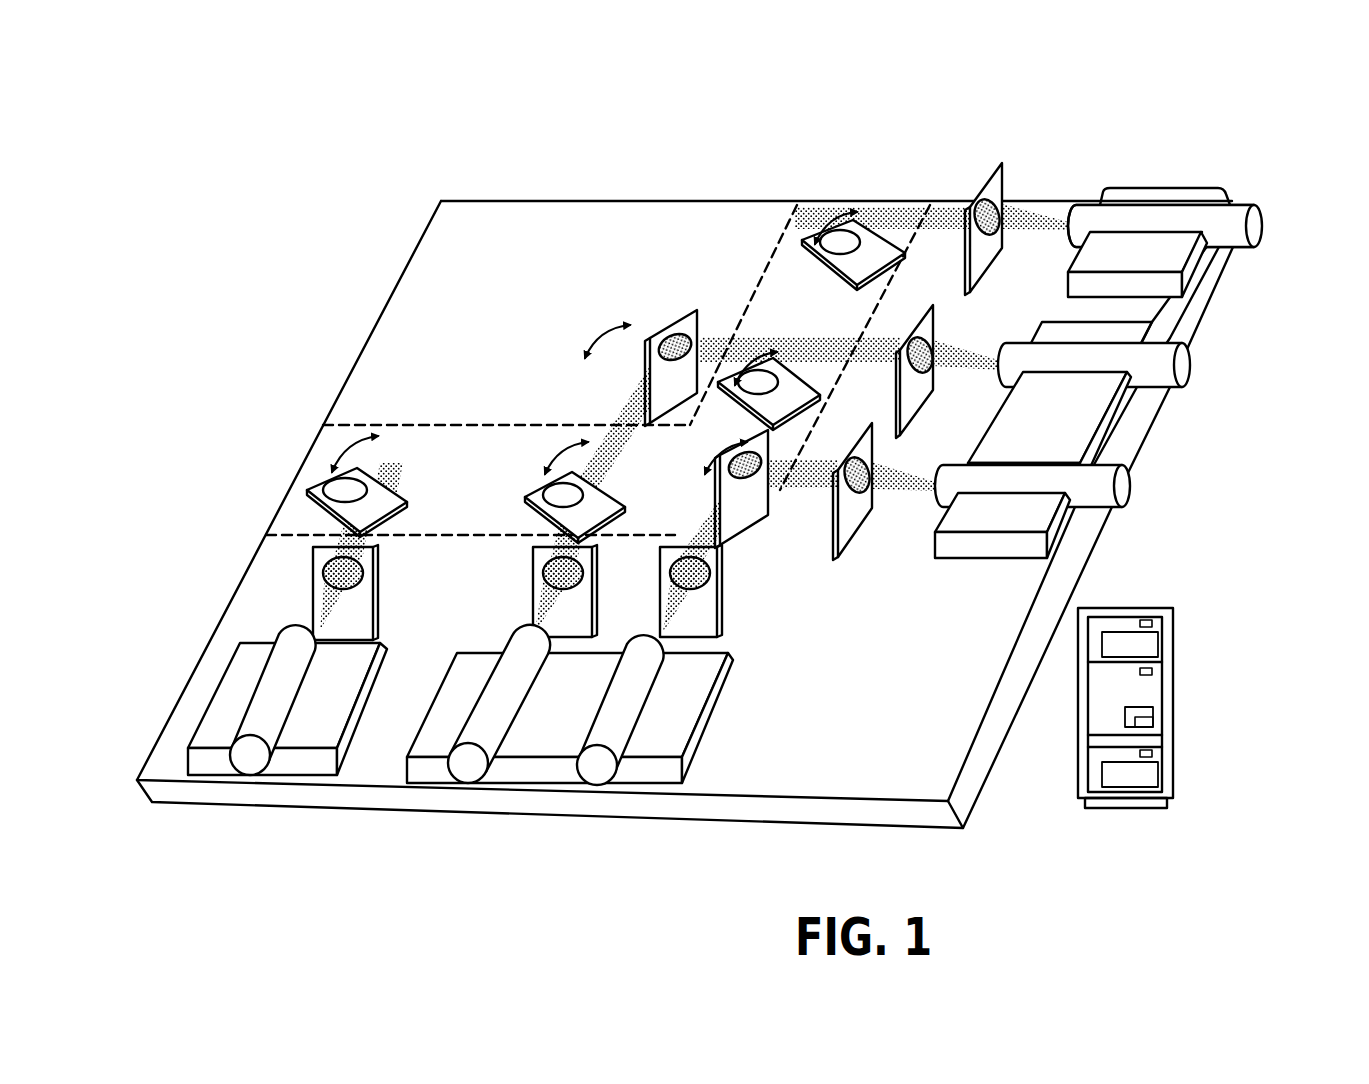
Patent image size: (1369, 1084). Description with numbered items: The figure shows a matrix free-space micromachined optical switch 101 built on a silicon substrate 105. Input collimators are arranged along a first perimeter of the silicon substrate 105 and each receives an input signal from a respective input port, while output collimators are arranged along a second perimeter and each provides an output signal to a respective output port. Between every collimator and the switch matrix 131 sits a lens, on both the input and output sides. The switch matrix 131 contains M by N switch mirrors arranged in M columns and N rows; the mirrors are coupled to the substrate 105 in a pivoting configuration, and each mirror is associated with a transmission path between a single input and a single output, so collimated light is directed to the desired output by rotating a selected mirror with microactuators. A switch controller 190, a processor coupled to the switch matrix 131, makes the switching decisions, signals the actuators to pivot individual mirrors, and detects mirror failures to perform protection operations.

The matrix free-space micromachined optical switch 101 is at (600, 202).
The silicon substrate 105 is at (927, 817).
The switch matrix 131 is at (765, 267).
The switch controller 190 is at (1173, 685).